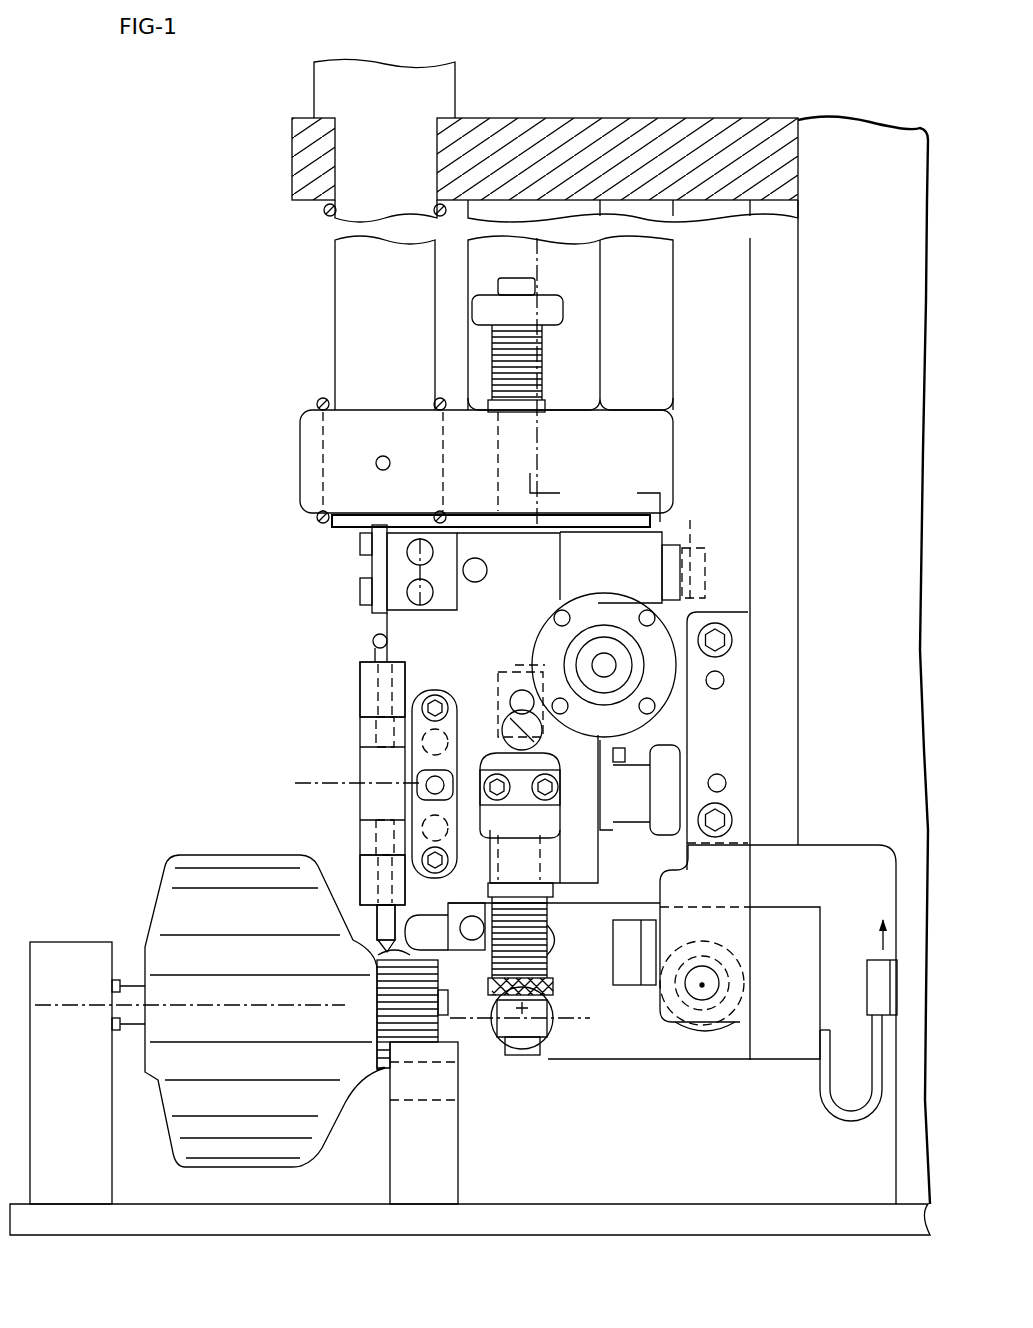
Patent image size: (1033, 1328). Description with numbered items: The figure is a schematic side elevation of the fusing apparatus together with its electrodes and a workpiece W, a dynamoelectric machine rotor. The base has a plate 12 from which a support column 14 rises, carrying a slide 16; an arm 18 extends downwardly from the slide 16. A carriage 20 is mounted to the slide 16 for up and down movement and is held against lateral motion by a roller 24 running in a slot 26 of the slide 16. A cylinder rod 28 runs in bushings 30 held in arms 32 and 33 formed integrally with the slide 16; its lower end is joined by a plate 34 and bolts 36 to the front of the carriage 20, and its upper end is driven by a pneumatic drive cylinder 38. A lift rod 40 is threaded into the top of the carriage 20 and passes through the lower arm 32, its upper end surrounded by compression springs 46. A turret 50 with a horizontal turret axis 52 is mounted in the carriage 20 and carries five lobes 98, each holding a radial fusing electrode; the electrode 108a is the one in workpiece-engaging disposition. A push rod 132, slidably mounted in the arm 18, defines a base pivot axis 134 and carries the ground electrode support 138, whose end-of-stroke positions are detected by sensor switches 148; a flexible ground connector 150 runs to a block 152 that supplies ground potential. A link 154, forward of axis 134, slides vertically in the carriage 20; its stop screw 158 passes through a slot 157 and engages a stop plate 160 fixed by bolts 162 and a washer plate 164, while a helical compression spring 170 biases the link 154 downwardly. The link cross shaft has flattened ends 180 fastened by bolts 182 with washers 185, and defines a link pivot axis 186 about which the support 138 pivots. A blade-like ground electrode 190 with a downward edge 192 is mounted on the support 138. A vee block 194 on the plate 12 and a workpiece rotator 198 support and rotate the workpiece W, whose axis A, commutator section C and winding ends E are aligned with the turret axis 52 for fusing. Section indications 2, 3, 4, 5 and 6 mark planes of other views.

The section line 2- 2 is at (342, 630).
The section line 3- 3 is at (537, 238).
The section line 4-4 / clamp bar 4 is at (414, 570).
The section line 5- 5 is at (520, 665).
The section line 6- 6 is at (458, 1012).
The plate 12 is at (718, 1205).
The support column 14 is at (848, 845).
The slide 16 is at (735, 466).
The arm 18 is at (745, 878).
The carriage 20 is at (392, 630).
The roller 24 is at (690, 555).
The slot 26 is at (705, 620).
The cylinder rod 28 is at (345, 346).
The bushings 30 is at (325, 216).
The arm 32 is at (305, 466).
The arm 33 is at (300, 180).
The plate 34 is at (362, 545).
The bolts 36 is at (372, 542).
The pneumatic drive cylinder 38 is at (445, 80).
The lift rod 40 is at (548, 525).
The compression springs 46 is at (540, 362).
The turret 50 is at (345, 748).
The turret axis 52 is at (305, 783).
The lobes 98 is at (368, 690).
The fusing electrode 108a is at (380, 922).
The push rod 132 is at (718, 985).
The base pivot axis 134 is at (705, 982).
The ground electrode support 138 is at (745, 1060).
The sensor switches 148 is at (632, 990).
The flexible ground connector 150 is at (840, 1122).
The block 152 is at (873, 982).
The link 154 is at (500, 670).
The slot 157 is at (548, 642).
The stop screw 158 is at (512, 720).
The stop plate 160 is at (500, 760).
The bolts 162 is at (540, 800).
The washer plate 164 is at (525, 777).
The helical compression spring 170 is at (550, 955).
The flattened ends 180 is at (530, 1006).
The bolts 182 is at (510, 1037).
The washers 185 is at (548, 1015).
The link pivot axis 186 is at (522, 1032).
The ground electrode 190 is at (430, 934).
The edge 192 is at (372, 942).
The vee block 194 is at (458, 1152).
The workpiece rotator 198 is at (85, 940).
The workpiece axis A is at (193, 1005).
The commutator section C is at (378, 1078).
The ends E is at (372, 955).
The workpiece W is at (165, 882).